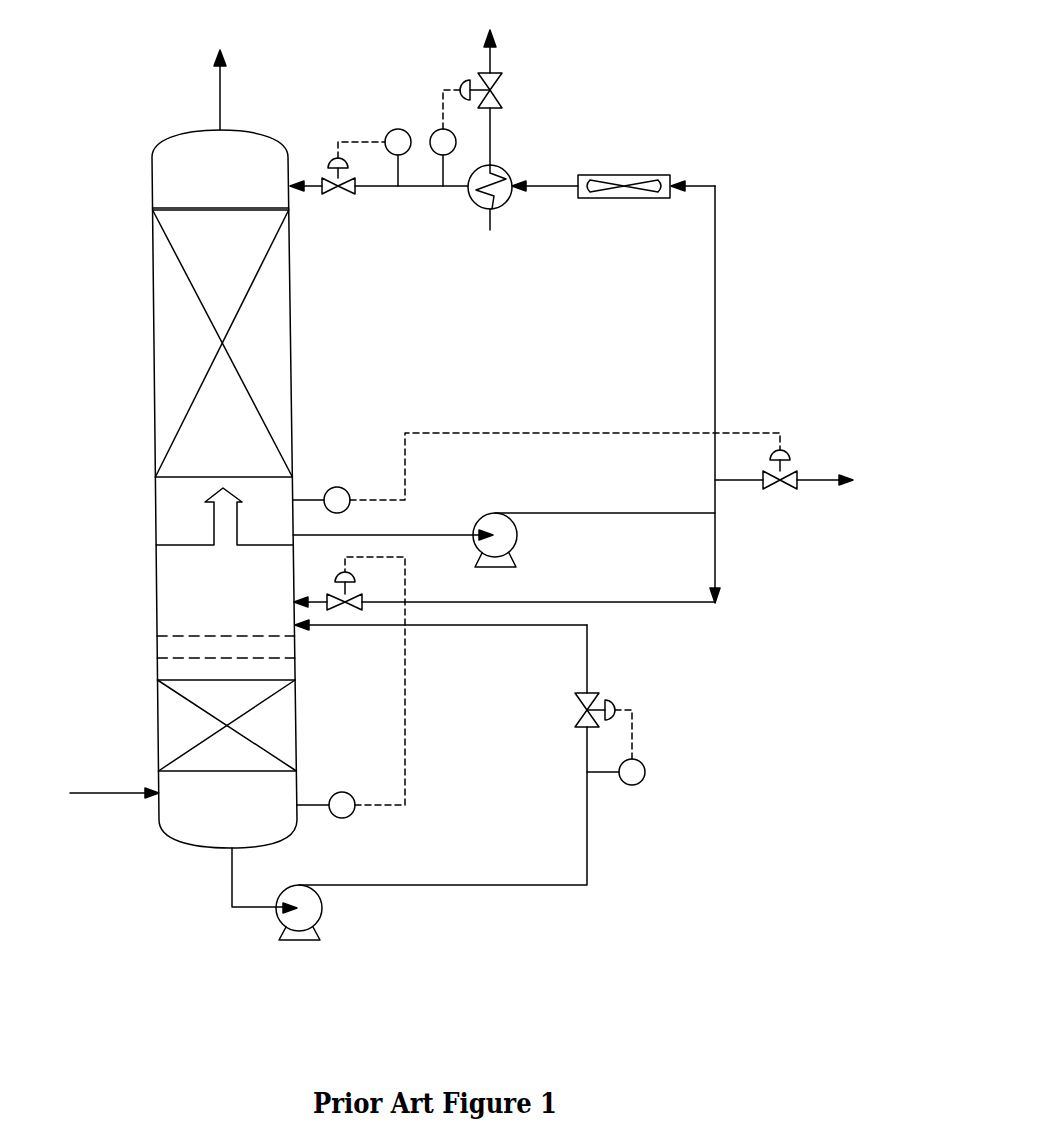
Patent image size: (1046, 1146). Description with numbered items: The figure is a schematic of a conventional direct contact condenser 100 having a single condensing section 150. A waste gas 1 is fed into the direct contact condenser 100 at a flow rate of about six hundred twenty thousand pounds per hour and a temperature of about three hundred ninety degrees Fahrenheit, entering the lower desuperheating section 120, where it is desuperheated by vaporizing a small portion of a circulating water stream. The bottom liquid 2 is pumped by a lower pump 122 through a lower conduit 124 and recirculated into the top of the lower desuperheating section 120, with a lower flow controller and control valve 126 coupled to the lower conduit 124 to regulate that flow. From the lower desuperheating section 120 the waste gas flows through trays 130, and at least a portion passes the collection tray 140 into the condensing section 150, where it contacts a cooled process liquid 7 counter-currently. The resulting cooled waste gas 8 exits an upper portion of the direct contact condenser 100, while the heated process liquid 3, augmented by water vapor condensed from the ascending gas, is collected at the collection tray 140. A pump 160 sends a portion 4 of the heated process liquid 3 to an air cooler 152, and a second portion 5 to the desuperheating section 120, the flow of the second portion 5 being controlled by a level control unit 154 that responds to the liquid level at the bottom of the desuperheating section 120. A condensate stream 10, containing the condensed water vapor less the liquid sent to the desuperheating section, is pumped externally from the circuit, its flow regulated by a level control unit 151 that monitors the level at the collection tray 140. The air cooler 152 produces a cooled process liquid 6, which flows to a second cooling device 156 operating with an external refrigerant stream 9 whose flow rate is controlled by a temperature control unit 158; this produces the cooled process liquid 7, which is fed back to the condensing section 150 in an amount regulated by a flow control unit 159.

The direct contact condenser 100 is at (155, 153).
The condensing section 150 is at (130, 213).
The collection tray 140 is at (135, 487).
The trays 130 is at (148, 628).
The lower desuperheating section 120 is at (148, 683).
The waste gas 1 is at (114, 806).
The cooled waste gas 8 is at (212, 90).
The cooled process liquid 7 is at (379, 176).
The flow control unit 159 is at (402, 114).
The temperature control unit 158 is at (425, 86).
The external refrigerant stream 9 is at (497, 95).
The second cooling device 156 is at (498, 168).
The cooled process liquid 6 is at (545, 176).
The air cooler 152 is at (624, 202).
The portion of heated process liquid 4 is at (693, 374).
The second portion 5 is at (520, 591).
The condensate stream 10 is at (784, 469).
The level control unit 151 is at (536, 473).
The heated process liquid 3 is at (393, 526).
The pump 160 is at (594, 540).
The bottom liquid 2 is at (398, 766).
The level control unit 154 is at (351, 698).
The lower pump 122 is at (321, 912).
The lower conduit 124 is at (464, 763).
The lower flow controller and control valve 126 is at (660, 693).